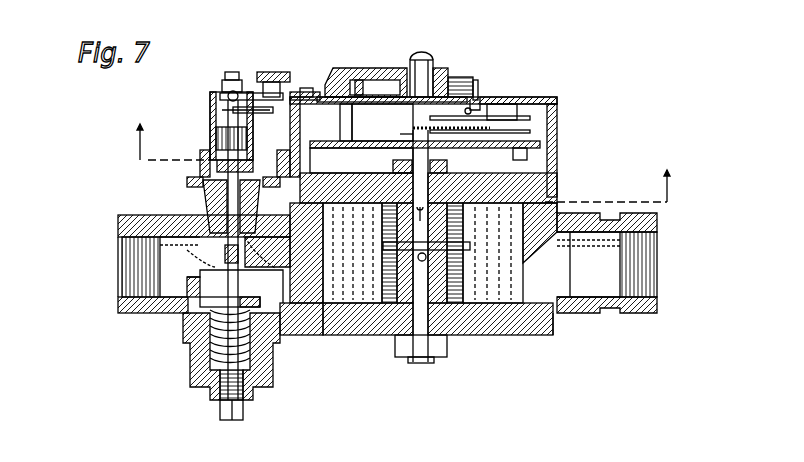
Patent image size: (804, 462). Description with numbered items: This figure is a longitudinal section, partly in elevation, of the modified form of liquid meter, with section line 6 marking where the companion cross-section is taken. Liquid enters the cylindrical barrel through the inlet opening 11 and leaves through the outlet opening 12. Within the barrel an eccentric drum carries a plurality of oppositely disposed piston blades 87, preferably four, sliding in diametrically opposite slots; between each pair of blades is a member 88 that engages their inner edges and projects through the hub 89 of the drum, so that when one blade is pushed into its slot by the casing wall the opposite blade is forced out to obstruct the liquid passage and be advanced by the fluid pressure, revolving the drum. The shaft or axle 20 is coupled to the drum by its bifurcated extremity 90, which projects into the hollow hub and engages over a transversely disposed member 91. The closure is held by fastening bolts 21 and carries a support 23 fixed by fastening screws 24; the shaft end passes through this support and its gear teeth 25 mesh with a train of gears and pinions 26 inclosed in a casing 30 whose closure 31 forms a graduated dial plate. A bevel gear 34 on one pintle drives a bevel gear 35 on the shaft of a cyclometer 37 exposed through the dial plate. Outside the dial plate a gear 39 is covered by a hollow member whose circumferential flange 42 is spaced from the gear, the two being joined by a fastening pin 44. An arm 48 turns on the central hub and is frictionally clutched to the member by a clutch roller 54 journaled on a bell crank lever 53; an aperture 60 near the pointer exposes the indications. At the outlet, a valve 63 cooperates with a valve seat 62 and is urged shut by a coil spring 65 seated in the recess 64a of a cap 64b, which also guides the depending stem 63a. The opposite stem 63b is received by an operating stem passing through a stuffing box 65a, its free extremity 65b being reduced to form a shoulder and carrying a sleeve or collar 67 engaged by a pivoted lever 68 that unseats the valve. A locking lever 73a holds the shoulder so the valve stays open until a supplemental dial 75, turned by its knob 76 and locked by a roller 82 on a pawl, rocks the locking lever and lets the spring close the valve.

The section line 6— 6 is at (396, 169).
The inlet opening 11 is at (640, 290).
The outlet opening 12 is at (135, 282).
The shaft or axle 20 is at (413, 158).
The fastening bolts or screws 21 is at (553, 195).
The support 23 is at (376, 122).
The fastening screws or bolts 24 is at (330, 141).
The gear teeth 25 is at (400, 132).
The train of gears and pinions 26 is at (450, 128).
The casing 30 is at (557, 162).
The closure or dial plate 31 is at (548, 100).
The bevel gear 34 is at (480, 108).
The bevel gear 35 is at (490, 120).
The cyclometer 37 is at (505, 112).
The gear 39 is at (460, 77).
The circumferential flange 42 is at (478, 100).
The fastening pin 44 is at (420, 60).
The arm 48 is at (365, 75).
The bell crank lever 53 is at (385, 80).
The anti-friction or clutch roller 54 is at (345, 97).
The aperture 60 is at (318, 92).
The valve seat 62 is at (245, 282).
The valve 63 is at (200, 318).
The depending stem 63a is at (216, 262).
The stem 63b is at (240, 300).
The recess 64a is at (229, 412).
The cap 64b is at (258, 374).
The elastic member or coil spring 65 is at (207, 360).
The stuffing box 65a is at (207, 200).
The free extremity 65b is at (230, 78).
The sleeve or collar 67 is at (253, 165).
The lever 68 is at (230, 135).
The locking lever 73a is at (222, 108).
The supplemental dial or indicator 75 is at (292, 92).
The operating handle or knob 76 is at (270, 82).
The anti-friction roller 82 is at (250, 93).
The piston blades 87 is at (413, 300).
The member 88 is at (378, 242).
The hub 89 is at (440, 244).
The bifurcated extremity 90 is at (466, 221).
The transversely disposed member 91 is at (414, 234).